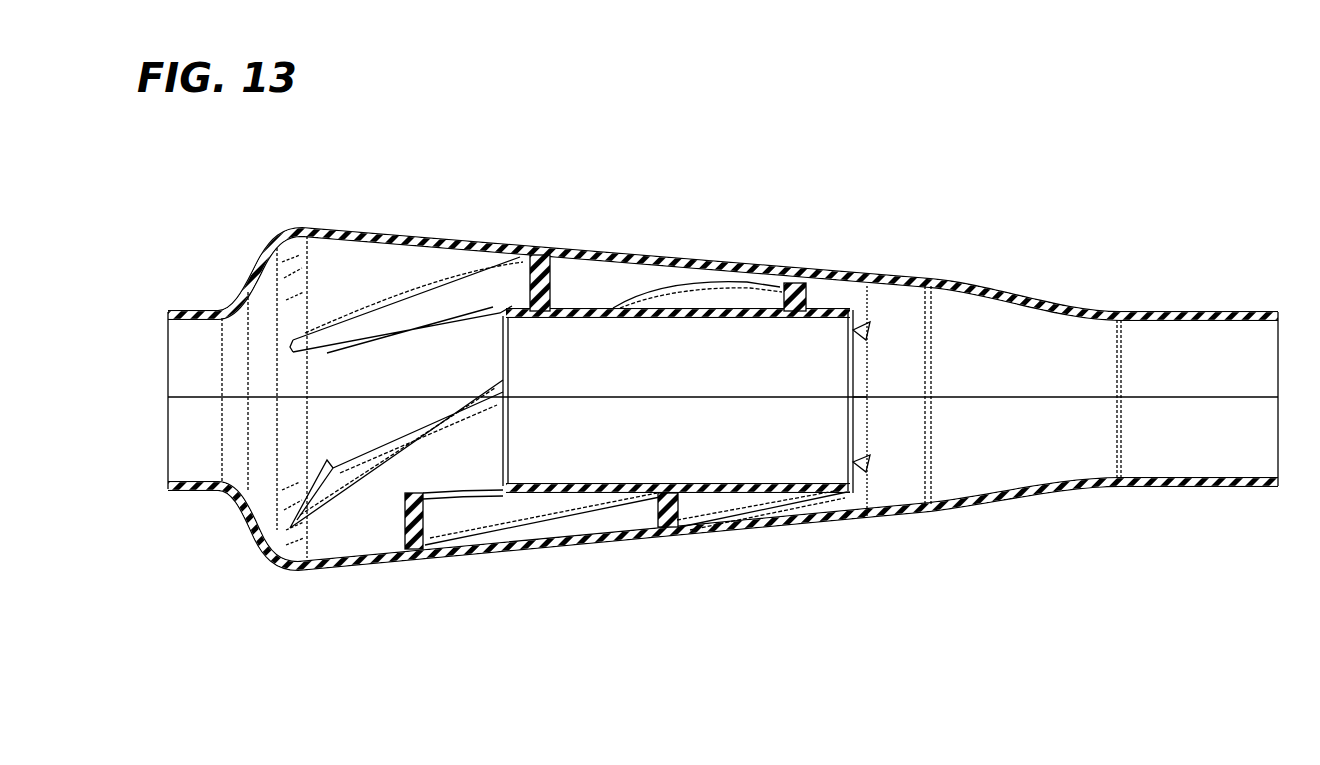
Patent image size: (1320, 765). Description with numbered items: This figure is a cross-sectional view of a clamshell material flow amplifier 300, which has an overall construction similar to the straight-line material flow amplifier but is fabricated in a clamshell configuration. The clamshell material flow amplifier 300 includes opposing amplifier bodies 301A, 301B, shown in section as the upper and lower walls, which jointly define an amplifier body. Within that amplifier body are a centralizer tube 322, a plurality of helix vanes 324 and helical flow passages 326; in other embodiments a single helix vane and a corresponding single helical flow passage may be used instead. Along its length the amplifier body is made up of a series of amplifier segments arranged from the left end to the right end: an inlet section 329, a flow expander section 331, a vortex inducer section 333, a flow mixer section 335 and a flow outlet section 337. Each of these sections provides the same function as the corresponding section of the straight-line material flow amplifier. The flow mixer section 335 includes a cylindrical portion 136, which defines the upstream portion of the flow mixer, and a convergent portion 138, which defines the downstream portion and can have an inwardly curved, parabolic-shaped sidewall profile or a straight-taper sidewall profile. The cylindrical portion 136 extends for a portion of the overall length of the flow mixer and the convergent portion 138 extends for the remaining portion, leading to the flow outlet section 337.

The clamshell material flow amplifier 300 is at (740, 158).
The amplifier body 301A is at (688, 262).
The amplifier body 301B is at (725, 537).
The centralizer tube 322 is at (662, 320).
The helix vanes 324 is at (400, 320).
The helical flow passages 326 is at (573, 275).
The inlet section 329 is at (192, 496).
The flow expander section 331 is at (258, 530).
The vortex inducer section 333 is at (608, 550).
The flow mixer section 335 is at (975, 520).
The cylindrical portion 136 is at (899, 530).
The convergent portion 138 is at (1007, 511).
The flow outlet section 337 is at (1253, 490).